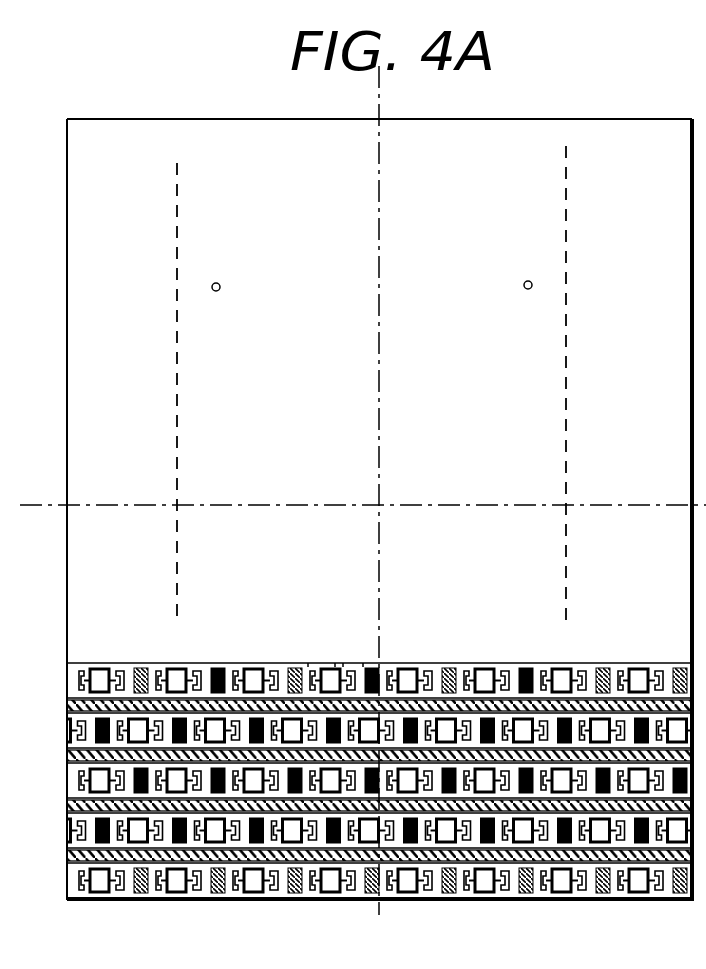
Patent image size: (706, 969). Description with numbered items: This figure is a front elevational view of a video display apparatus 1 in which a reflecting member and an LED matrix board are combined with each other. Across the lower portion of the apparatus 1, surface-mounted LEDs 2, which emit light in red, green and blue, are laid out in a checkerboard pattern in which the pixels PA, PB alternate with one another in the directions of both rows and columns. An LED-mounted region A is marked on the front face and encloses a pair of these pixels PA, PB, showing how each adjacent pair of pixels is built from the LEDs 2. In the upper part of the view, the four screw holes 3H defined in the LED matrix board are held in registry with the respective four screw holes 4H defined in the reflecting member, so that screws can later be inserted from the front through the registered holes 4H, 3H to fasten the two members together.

The substrate 1 is at (238, 119).
The LED 2 is at (133, 657).
The screw hole 4H is at (218, 282).
The screw hole 3H is at (372, 286).
The LED-mounted region A is at (305, 636).
The pixel PA is at (319, 649).
The pixel PB is at (355, 649).